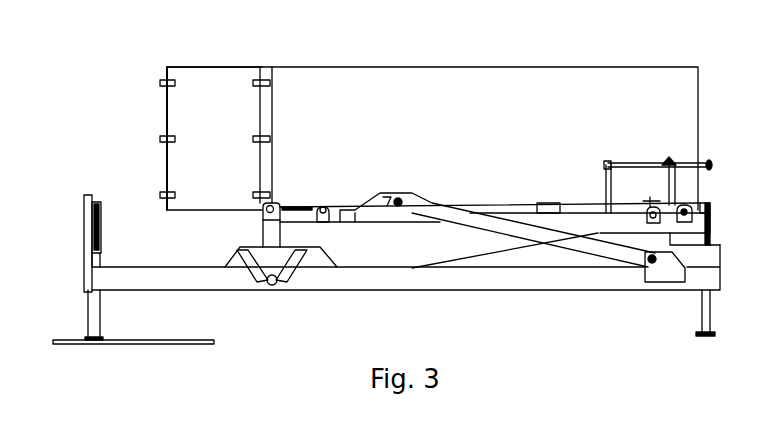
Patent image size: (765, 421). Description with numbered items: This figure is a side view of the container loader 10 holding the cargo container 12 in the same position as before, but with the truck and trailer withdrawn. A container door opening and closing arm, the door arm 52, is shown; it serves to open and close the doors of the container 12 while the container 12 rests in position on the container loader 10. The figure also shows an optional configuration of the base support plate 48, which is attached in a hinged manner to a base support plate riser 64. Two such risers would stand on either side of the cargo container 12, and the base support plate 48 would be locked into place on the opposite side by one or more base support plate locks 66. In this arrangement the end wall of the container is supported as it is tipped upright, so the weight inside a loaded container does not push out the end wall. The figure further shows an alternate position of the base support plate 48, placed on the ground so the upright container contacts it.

The container loader 10 is at (108, 117).
The cargo container 12 is at (450, 67).
The base support plate 48 is at (207, 67).
The door arm 52 is at (703, 165).
The base support plate riser 64 is at (262, 67).
The base support plate lock 66 is at (165, 80).